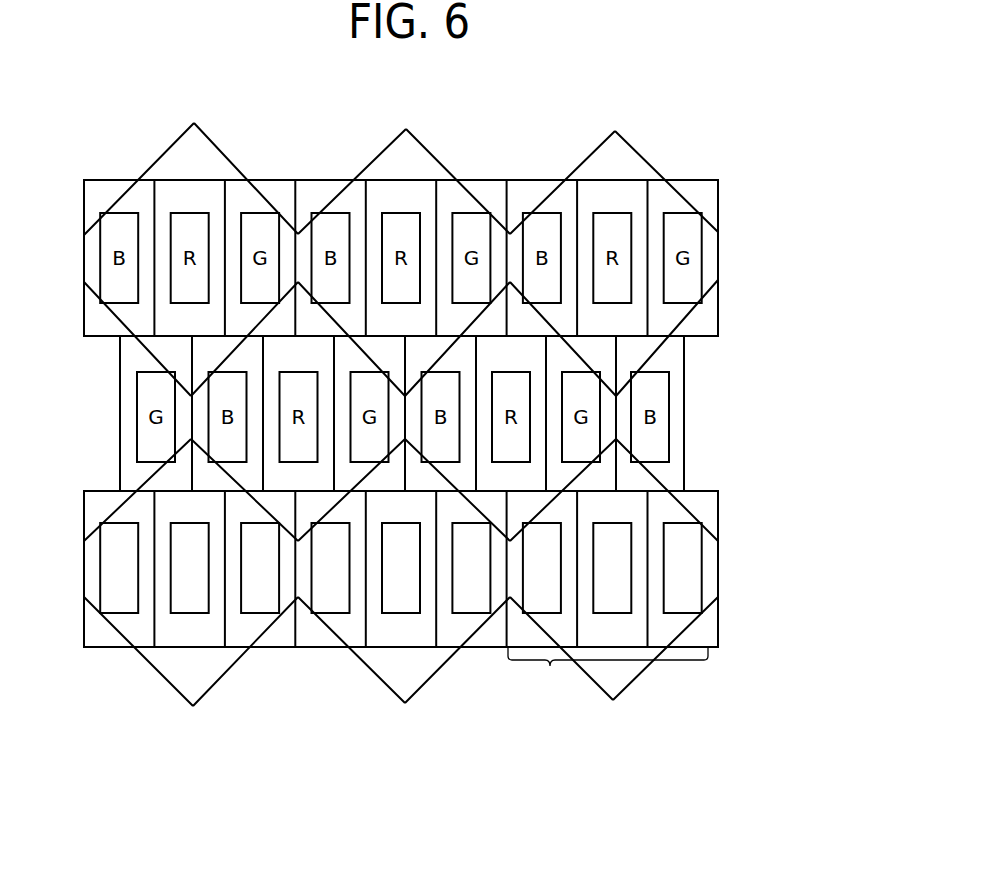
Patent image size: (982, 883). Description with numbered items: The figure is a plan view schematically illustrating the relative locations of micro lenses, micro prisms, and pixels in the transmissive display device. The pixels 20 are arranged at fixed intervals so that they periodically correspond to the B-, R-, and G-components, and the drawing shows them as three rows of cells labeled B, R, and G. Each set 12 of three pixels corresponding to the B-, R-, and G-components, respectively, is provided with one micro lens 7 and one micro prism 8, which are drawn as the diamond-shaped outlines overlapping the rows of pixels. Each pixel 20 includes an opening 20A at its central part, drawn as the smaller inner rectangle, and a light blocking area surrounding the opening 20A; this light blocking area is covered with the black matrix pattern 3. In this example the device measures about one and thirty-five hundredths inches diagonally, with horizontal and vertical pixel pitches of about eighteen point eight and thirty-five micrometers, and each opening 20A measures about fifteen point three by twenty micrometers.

The black matrix pattern 3 is at (700, 498).
The micro lens 7 is at (635, 682).
The micro prism 8 is at (718, 497).
The set of three pixels 12 is at (608, 675).
The pixel 20 is at (718, 622).
The opening 20A is at (697, 565).